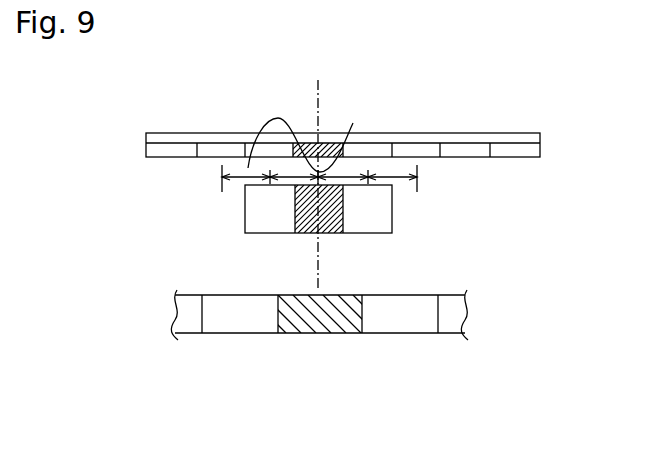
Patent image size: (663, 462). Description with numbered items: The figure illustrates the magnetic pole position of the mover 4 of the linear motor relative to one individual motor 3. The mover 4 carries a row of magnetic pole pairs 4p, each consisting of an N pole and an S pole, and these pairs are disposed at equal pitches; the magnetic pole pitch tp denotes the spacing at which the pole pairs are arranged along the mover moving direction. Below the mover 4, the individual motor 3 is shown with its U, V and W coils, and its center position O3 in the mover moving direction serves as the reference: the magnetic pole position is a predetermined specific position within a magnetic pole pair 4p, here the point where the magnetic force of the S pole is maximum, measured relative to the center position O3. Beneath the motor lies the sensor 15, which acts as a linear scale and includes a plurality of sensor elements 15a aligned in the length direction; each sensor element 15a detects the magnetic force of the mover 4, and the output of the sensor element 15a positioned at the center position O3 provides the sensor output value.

The mover 4 is at (538, 118).
The magnetic pole pair 4p is at (165, 98).
The individual motor 3 is at (397, 213).
The magnetic pole pitch tp is at (447, 193).
The center position of the individual motor O3 is at (318, 250).
The sensor 15 is at (308, 355).
The sensor element 15a is at (193, 330).